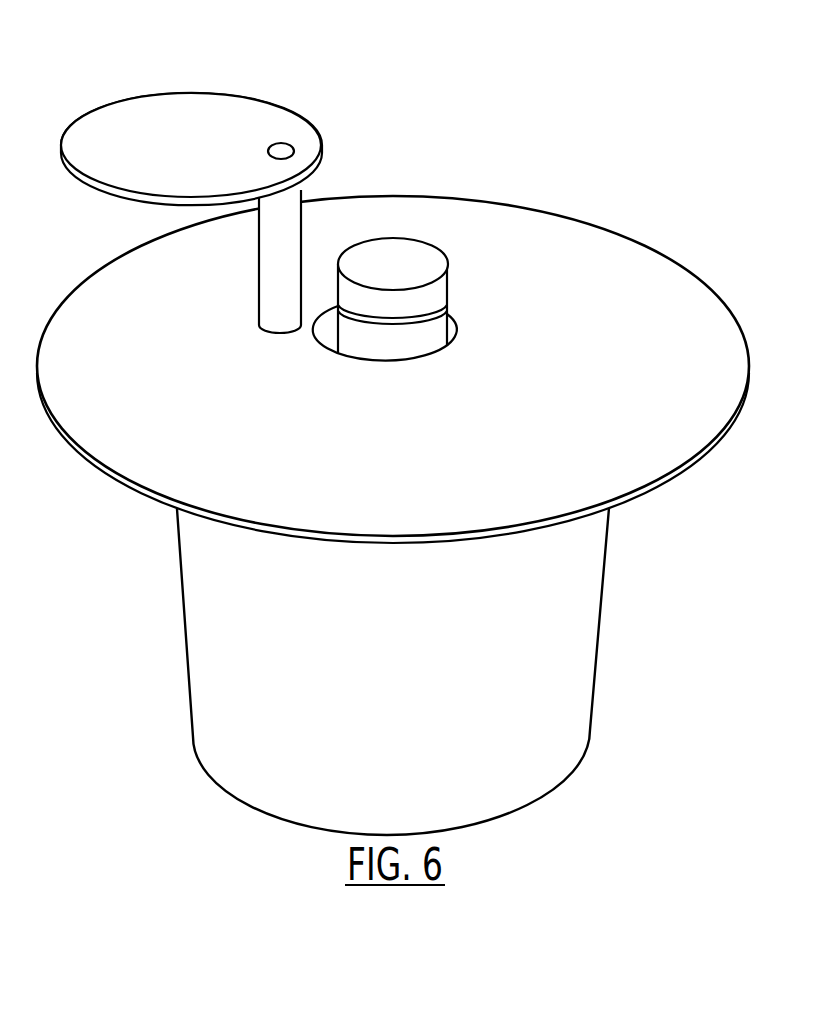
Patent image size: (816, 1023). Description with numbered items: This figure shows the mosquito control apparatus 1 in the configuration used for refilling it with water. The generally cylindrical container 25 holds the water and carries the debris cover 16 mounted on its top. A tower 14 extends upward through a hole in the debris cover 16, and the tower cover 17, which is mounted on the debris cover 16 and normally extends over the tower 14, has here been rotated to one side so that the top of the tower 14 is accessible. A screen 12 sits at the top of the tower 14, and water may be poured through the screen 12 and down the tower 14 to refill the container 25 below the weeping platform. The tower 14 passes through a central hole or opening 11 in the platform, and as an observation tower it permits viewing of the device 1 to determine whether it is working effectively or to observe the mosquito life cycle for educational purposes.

The mosquito control apparatus 1 is at (322, 46).
The central hole or opening 11 is at (318, 333).
The screen 12 is at (405, 258).
The tower 14 is at (422, 313).
The debris cover 16 is at (614, 258).
The tower cover 17 is at (185, 105).
The container 25 is at (567, 715).